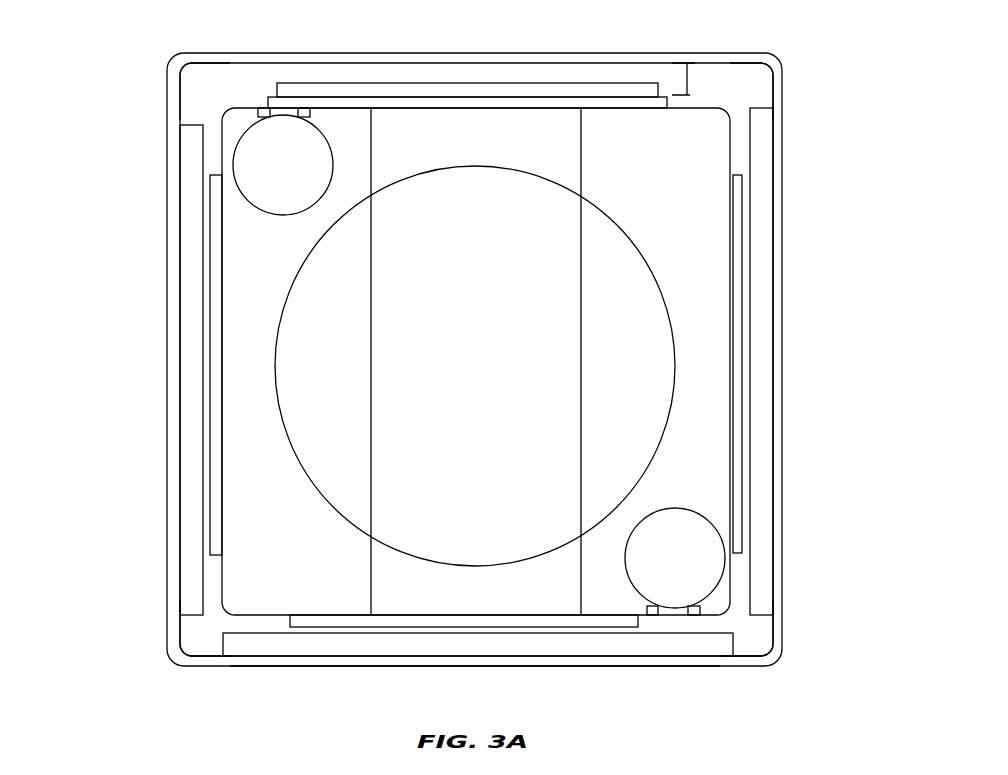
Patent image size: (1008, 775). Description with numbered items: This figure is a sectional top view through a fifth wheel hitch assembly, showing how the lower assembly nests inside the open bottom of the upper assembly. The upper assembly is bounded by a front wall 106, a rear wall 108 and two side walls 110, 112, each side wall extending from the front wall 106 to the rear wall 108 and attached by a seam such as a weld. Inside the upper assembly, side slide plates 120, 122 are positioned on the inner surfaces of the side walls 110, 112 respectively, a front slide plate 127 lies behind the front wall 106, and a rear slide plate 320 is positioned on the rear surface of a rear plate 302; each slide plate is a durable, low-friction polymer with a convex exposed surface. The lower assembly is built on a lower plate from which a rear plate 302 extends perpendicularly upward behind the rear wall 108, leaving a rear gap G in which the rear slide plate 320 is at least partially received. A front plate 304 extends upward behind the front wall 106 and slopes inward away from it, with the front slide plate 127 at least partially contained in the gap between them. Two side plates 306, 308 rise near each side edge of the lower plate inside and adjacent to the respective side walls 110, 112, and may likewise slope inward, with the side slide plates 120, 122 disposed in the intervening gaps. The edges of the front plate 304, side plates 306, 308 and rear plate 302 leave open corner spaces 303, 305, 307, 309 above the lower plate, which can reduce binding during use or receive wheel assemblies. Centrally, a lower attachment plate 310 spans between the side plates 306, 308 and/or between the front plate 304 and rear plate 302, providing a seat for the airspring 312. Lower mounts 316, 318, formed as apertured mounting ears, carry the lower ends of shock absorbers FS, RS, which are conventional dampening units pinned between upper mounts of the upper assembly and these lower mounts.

The rear wall 108 is at (717, 57).
The side wall 110 is at (778, 408).
The side wall 112 is at (167, 347).
The side slide plate 122 is at (188, 305).
The side plate 308 is at (215, 384).
The side plate 306 is at (737, 353).
The side slide plate 120 is at (758, 290).
The rear slide plate 320 is at (480, 88).
The rear plate 302 is at (280, 100).
The front plate 304 is at (310, 623).
The front slide plate 127 is at (622, 642).
The front wall 106 is at (702, 663).
The lower attachment plate 310 is at (387, 590).
The airspring 312 is at (313, 440).
The shock absorber FS is at (265, 155).
The lower mount 318 is at (307, 117).
The shock absorber RS is at (695, 573).
The lower mount 316 is at (717, 612).
The rear gap G is at (690, 79).
The open corner space 303 is at (208, 107).
The open corner space 309 is at (727, 95).
The open corner space 305 is at (215, 625).
The open corner space 307 is at (745, 638).